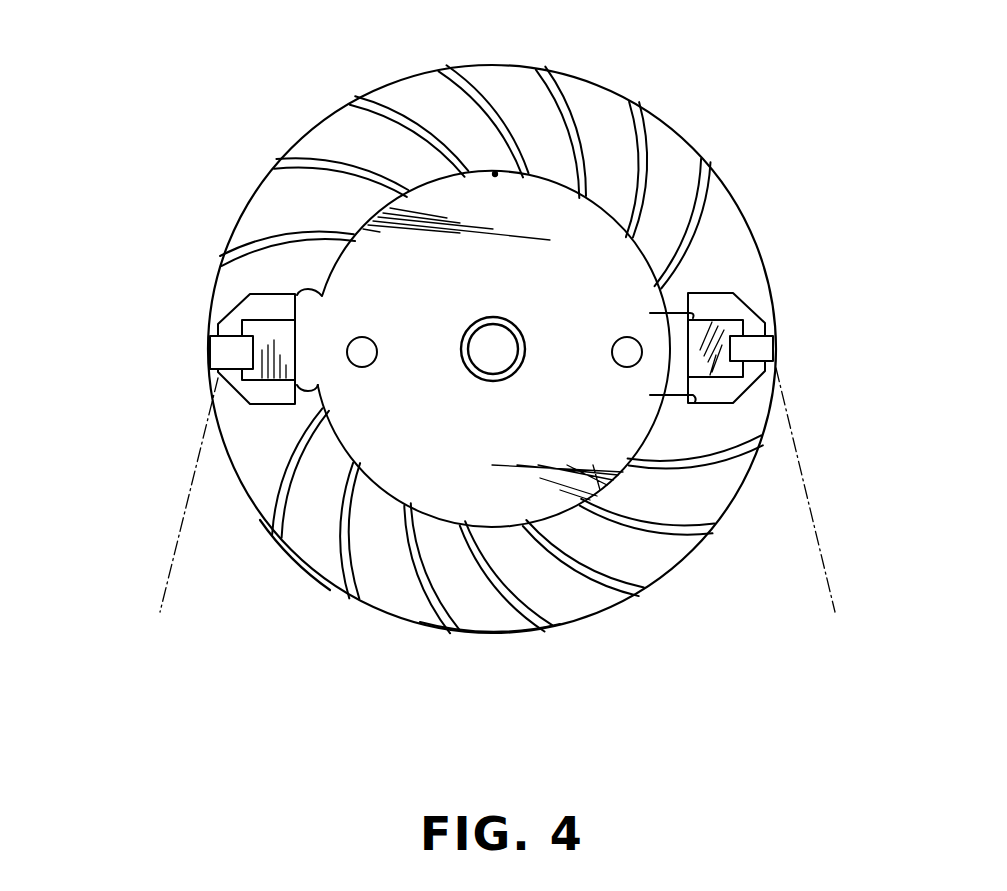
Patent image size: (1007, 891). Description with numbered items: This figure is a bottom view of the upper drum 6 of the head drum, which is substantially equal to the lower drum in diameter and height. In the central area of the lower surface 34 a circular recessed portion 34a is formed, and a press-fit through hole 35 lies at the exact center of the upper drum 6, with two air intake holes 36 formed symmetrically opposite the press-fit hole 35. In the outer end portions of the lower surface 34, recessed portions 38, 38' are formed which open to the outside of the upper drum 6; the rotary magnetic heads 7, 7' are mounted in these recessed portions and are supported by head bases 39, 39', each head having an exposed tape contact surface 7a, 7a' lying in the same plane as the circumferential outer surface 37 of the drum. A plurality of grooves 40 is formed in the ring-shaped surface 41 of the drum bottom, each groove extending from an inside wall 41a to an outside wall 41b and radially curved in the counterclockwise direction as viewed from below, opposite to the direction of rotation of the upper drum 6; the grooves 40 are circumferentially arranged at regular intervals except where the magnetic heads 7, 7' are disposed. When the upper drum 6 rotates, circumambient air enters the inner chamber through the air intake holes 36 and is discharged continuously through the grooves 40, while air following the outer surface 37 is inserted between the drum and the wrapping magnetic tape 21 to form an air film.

The upper drum 6 is at (779, 136).
The rotary magnetic head 7 is at (245, 374).
The rotary magnetic head 7' is at (754, 343).
The tape contact surface 7a is at (201, 356).
The tape contact surface 7a' is at (789, 356).
The magnetic tape 21 is at (808, 495).
The lower surface 34 is at (738, 208).
The circular recessed portion 34a is at (495, 172).
The press-fit through hole 35 is at (492, 321).
The air intake holes 36 is at (377, 345).
The outer surface 37 is at (505, 633).
The recessed portion 38 is at (336, 395).
The recessed portion 38' is at (654, 393).
The head base 39 is at (336, 292).
The head base 39' is at (653, 298).
The grooves 40 is at (353, 100).
The ring-shaped surface 41 is at (318, 560).
The inside wall 41a is at (344, 444).
The outside wall 41b is at (293, 556).